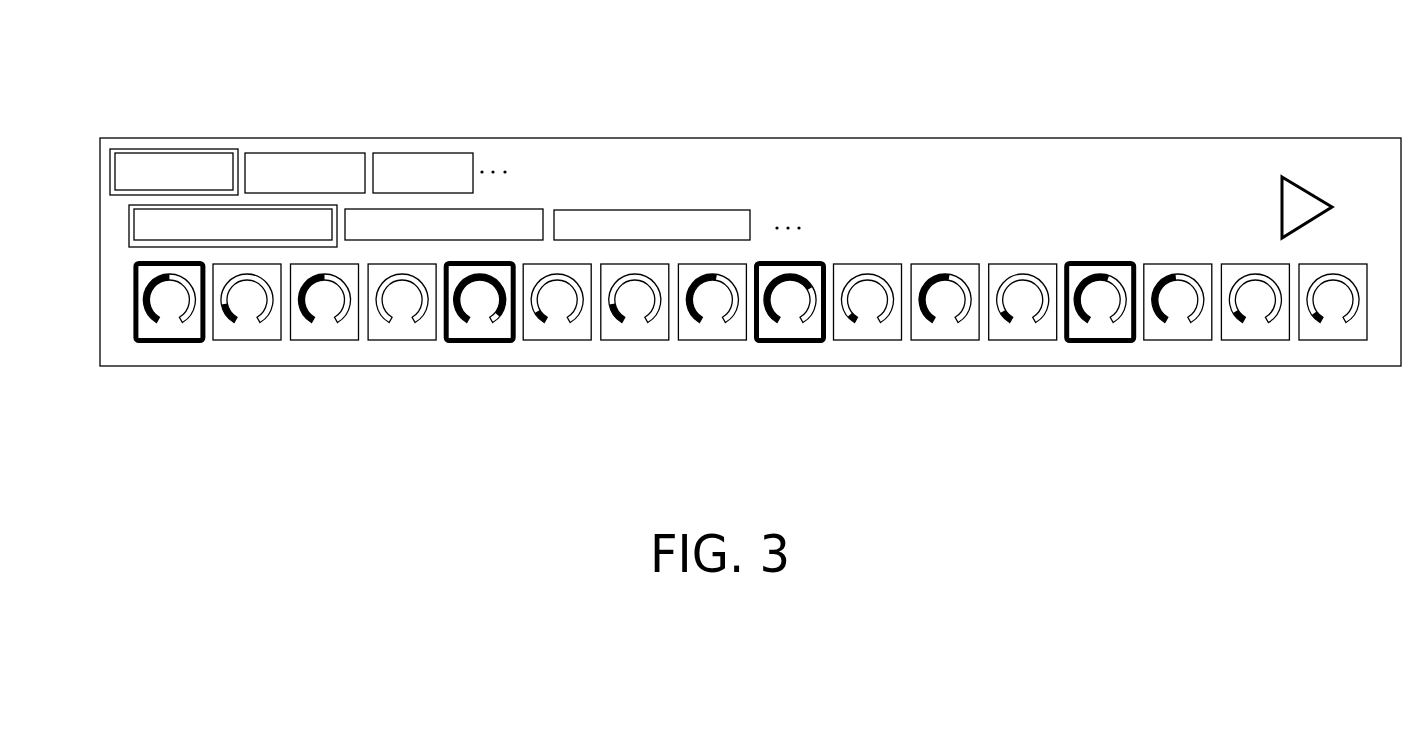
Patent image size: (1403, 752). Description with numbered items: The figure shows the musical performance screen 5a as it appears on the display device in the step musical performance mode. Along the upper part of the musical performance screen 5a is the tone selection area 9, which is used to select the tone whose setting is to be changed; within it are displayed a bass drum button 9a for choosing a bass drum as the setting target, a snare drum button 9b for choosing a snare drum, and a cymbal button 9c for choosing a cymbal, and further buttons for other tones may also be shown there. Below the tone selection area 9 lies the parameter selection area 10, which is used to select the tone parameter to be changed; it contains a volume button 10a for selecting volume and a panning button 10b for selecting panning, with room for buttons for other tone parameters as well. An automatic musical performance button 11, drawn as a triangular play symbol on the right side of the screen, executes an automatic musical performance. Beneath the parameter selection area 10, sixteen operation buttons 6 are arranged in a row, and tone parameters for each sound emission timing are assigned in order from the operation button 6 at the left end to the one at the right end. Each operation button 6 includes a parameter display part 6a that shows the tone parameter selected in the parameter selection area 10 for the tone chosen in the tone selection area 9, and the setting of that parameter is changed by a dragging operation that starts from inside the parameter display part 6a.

The musical performance screen 5a is at (1208, 157).
The operation button 6 is at (708, 338).
The parameter display part 6a is at (147, 317).
The tone selection area 9 is at (262, 70).
The bass drum button 9a is at (224, 157).
The snare drum button 9b is at (357, 157).
The cymbal button 9c is at (425, 157).
The parameter selection area 10 is at (447, 180).
The volume button 10a is at (147, 227).
The panning button 10b is at (523, 217).
The automatic musical performance button 11 is at (1303, 202).